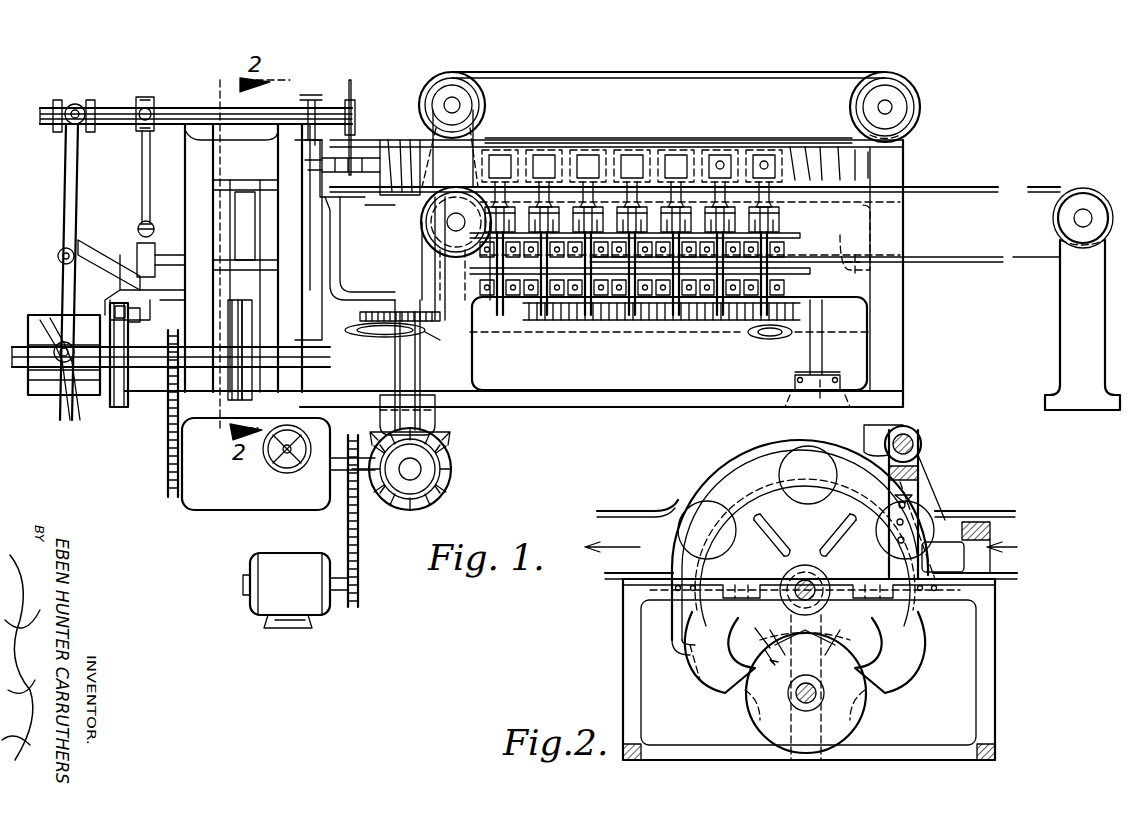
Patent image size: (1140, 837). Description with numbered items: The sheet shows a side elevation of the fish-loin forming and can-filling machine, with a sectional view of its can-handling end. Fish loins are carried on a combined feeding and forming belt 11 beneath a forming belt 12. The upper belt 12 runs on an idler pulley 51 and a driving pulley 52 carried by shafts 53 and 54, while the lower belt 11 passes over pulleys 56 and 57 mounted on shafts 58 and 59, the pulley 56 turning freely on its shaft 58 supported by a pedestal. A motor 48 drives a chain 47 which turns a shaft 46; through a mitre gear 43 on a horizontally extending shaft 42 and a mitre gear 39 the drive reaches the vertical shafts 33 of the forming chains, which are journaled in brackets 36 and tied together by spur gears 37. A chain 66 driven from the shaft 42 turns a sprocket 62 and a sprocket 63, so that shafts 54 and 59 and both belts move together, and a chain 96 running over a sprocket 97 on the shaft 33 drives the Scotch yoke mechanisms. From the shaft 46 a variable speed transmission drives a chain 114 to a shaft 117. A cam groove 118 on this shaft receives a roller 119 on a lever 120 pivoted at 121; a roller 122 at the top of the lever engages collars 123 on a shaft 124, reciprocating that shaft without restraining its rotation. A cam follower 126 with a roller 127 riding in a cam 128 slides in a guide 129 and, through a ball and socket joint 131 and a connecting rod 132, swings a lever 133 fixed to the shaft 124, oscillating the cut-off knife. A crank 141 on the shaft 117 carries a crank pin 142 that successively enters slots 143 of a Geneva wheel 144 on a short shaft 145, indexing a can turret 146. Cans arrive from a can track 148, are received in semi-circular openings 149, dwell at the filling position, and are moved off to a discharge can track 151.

In FIG. 1, the combined feeding and forming belt 11 is at (990, 186).
In FIG. 1, the forming belt 12 is at (732, 72).
In FIG. 1, the shaft 33 is at (405, 362).
In FIG. 1, the bracket 36 is at (358, 262).
In FIG. 1, the spur gear 37 is at (360, 322).
In FIG. 1, the mitre gear 39 is at (440, 438).
In FIG. 1, the horizontally extending shaft 42 is at (420, 469).
In FIG. 1, the mitre gear 43 is at (457, 486).
In FIG. 1, the shaft 46 is at (376, 496).
In FIG. 1, the chain 47 is at (359, 548).
In FIG. 1, the motor 48 is at (295, 590).
In FIG. 1, the idler pulley 51 is at (905, 88).
In FIG. 1, the driving pulley 52 is at (480, 102).
In FIG. 1, the shaft 53 is at (885, 107).
In FIG. 1, the shaft 54 is at (460, 108).
In FIG. 1, the pulley 56 is at (1095, 238).
In FIG. 1, the pulley 57 is at (463, 237).
In FIG. 1, the shaft 58 is at (1084, 210).
In FIG. 1, the shaft 59 is at (464, 223).
In FIG. 1, the sprocket 62 is at (480, 72).
In FIG. 1, the sprocket 63 is at (420, 222).
In FIG. 1, the chain 66 is at (438, 70).
In FIG. 1, the chain 96 is at (628, 334).
In FIG. 1, the sprocket 97 is at (432, 336).
In FIG. 1, the chain 114 is at (167, 448).
In FIG. 1, the shaft 117 is at (145, 370).
In FIG. 1, the cam groove 118 is at (45, 312).
In FIG. 1, the roller 119 is at (72, 420).
In FIG. 1, the lever 120 is at (68, 178).
In FIG. 1, the pivot 121 is at (62, 252).
In FIG. 1, the roller 122 is at (75, 104).
In FIG. 1, the collars 123 is at (57, 100).
In FIG. 1, the shaft 124 is at (165, 108).
In FIG. 1, the cam follower 126 is at (152, 252).
In FIG. 1, the roller 127 is at (125, 315).
In FIG. 1, the cam 128 is at (120, 408).
In FIG. 1, the guide 129 is at (138, 276).
In FIG. 1, the ball and socket joint 131 is at (148, 222).
In FIG. 1, the connecting rod 132 is at (142, 185).
In FIG. 1, the lever 133 is at (144, 97).
In FIG. 1, the crank 141 is at (240, 338).
In FIG. 1, the crank pin 142 is at (246, 300).
In FIG. 2, the crank pin 142 is at (748, 670).
In FIG. 2, the slots 143 is at (768, 648).
In FIG. 2, the Geneva wheel 144 is at (805, 581).
In FIG. 2, the short shaft 145 is at (815, 582).
In FIG. 1, the can turret 146 is at (312, 296).
In FIG. 2, the can turret 146 is at (915, 608).
In FIG. 2, the can track 148 is at (1015, 565).
In FIG. 2, the semi-circular openings 149 is at (893, 650).
In FIG. 2, the discharge can track 151 is at (656, 510).